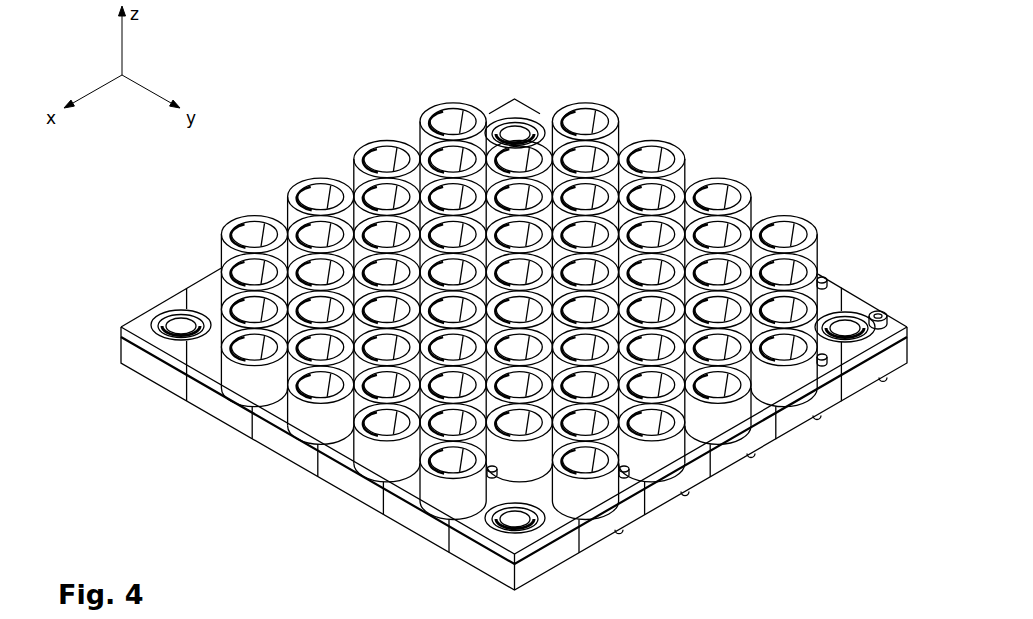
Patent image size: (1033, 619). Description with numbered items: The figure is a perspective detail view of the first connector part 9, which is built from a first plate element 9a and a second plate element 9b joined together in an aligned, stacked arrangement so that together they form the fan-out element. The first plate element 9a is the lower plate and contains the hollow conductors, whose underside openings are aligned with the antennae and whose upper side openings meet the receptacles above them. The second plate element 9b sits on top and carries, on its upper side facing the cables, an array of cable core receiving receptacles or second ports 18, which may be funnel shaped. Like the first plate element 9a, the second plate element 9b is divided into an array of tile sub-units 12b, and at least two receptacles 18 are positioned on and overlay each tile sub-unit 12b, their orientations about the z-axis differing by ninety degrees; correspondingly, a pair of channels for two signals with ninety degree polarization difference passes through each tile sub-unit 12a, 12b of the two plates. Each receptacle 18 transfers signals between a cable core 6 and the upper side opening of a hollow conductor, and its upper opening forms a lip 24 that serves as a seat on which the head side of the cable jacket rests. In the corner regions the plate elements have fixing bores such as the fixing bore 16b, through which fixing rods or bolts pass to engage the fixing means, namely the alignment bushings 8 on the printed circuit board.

The cable core 6 is at (795, 617).
The alignment bushing 8 is at (160, 332).
The first connector part 9 is at (722, 138).
The first plate element 9a is at (122, 342).
The second plate element 9b is at (174, 303).
The tile sub-unit 12a is at (352, 482).
The tile sub-unit 12b is at (477, 537).
The fixing bore 16b is at (866, 308).
The cable core receiving receptacle 18 is at (635, 87).
The lip 24 is at (515, 73).